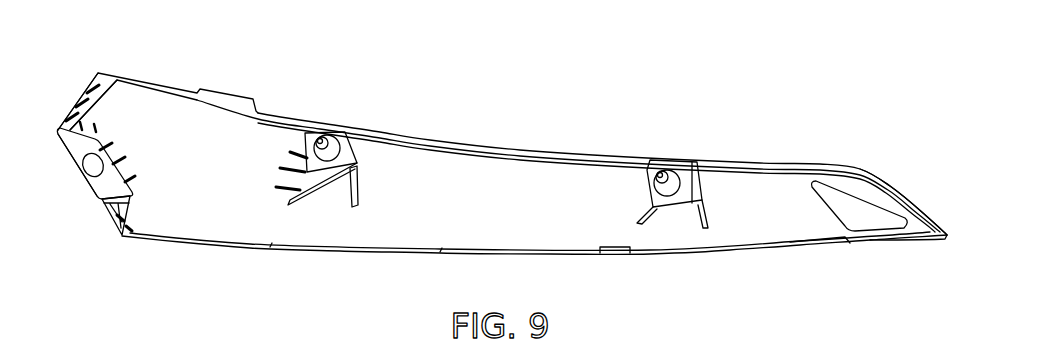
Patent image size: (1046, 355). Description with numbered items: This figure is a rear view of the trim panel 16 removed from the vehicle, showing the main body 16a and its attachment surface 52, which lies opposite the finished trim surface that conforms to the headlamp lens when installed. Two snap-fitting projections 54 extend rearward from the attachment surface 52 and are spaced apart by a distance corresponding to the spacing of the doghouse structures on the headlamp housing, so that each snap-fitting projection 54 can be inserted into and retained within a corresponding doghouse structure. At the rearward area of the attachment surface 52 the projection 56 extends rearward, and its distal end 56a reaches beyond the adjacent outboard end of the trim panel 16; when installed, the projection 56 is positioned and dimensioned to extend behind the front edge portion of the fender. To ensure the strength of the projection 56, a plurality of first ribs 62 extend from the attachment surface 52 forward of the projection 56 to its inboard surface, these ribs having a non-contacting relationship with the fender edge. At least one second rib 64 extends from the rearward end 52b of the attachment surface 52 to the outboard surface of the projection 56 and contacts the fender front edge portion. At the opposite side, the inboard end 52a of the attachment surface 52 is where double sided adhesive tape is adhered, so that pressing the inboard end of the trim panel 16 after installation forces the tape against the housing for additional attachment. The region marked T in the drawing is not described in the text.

The trim panel 16 is at (735, 116).
The main body 16a is at (472, 180).
The attachment surface 52 is at (573, 197).
The inboard end 52a is at (905, 198).
The rearward end 52b is at (72, 102).
The snap-fitting projections 54 is at (318, 140).
The projection 56 is at (78, 153).
The distal end 56a is at (70, 168).
The first ribs 62 is at (128, 182).
The second rib 64 is at (115, 233).
The window / tab opening T is at (860, 210).